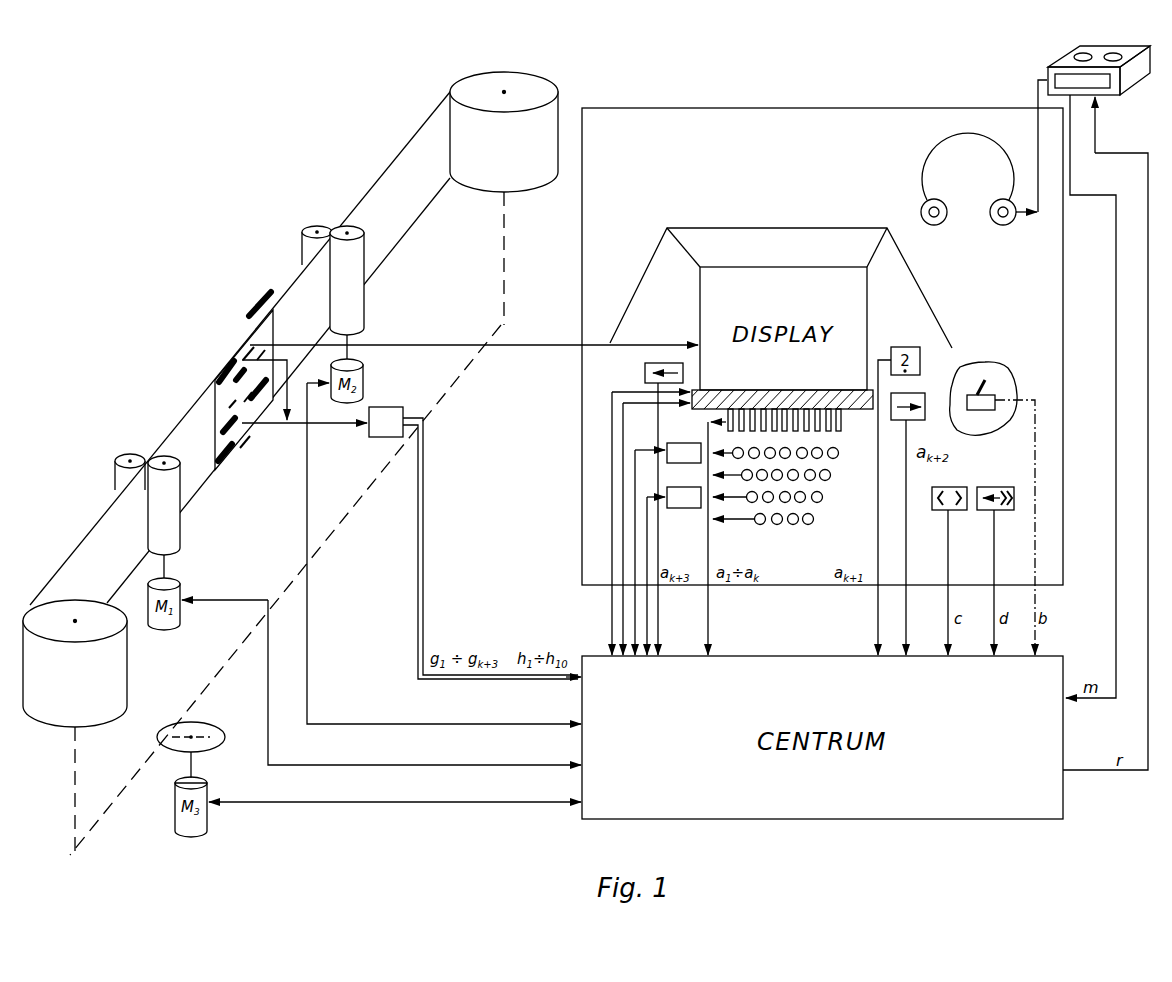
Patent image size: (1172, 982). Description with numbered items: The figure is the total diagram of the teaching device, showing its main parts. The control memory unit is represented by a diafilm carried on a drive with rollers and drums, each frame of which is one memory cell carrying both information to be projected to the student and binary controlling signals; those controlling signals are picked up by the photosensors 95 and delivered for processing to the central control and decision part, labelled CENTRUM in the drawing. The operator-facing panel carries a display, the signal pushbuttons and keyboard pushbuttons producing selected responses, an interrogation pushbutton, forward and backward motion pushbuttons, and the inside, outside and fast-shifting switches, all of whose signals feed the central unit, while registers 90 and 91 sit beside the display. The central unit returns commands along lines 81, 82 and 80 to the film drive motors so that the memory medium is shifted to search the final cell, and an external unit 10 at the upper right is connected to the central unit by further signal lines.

The cassette/program carrier device 10 is at (1098, 82).
The control line to motor M3 80 is at (395, 793).
The control line to motor M2 81 is at (444, 554).
The control line to motor M1 82 is at (381, 683).
The display register 1D11 90 is at (666, 542).
The display register 2101 91 is at (670, 564).
The photosensors 95 is at (411, 543).